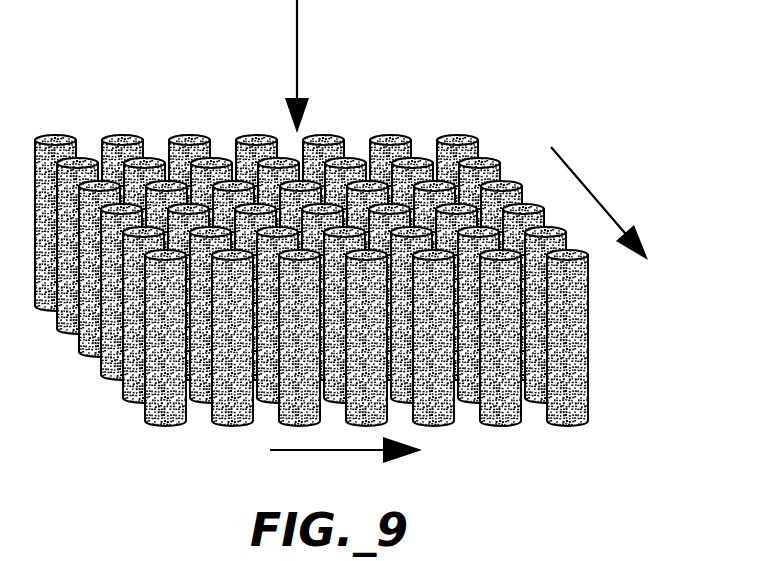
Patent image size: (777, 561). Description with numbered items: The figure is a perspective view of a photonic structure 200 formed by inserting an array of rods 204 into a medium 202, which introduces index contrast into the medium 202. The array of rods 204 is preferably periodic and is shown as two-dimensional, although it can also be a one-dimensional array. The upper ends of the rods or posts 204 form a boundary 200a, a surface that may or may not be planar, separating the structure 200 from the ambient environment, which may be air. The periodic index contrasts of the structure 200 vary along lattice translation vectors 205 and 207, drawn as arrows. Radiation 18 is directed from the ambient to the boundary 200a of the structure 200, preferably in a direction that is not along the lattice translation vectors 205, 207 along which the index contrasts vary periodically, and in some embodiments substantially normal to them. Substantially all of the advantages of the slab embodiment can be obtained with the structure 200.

The radiation 18 is at (298, 27).
The photonic structure 200 is at (320, 243).
The boundary 200a is at (323, 138).
The medium 202 is at (196, 428).
The array of rods 204 is at (566, 420).
The lattice translation vector 205 is at (327, 452).
The lattice translation vector 207 is at (600, 200).